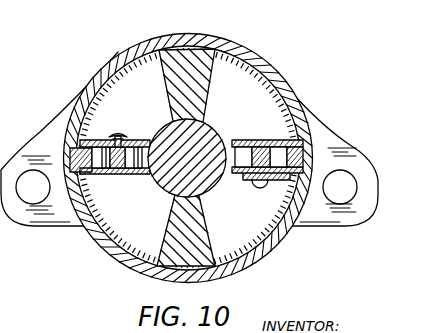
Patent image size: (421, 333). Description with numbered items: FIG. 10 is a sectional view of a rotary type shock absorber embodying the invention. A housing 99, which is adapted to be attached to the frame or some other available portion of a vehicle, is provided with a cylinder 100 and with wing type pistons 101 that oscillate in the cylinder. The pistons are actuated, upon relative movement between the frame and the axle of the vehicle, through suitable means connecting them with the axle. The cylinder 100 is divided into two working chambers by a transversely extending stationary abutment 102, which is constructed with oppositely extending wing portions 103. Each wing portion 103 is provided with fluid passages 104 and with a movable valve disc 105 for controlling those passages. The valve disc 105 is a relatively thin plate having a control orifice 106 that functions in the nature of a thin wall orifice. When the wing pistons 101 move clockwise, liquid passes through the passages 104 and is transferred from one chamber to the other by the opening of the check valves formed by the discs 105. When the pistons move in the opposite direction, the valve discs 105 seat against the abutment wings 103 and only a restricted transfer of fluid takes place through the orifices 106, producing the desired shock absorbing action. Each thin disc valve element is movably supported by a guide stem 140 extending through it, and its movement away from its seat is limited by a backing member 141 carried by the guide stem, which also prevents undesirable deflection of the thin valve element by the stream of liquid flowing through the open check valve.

The housing 99 is at (276, 73).
The cylinder 100 is at (268, 103).
The wing type pistons 101 is at (207, 86).
The stationary abutment 102 is at (224, 142).
The wing portions 103 is at (84, 174).
The fluid passages 104 is at (133, 175).
The valve disc 105 is at (145, 141).
The control orifice 106 is at (97, 140).
The guide stem 140 is at (121, 133).
The backing member 141 is at (103, 127).